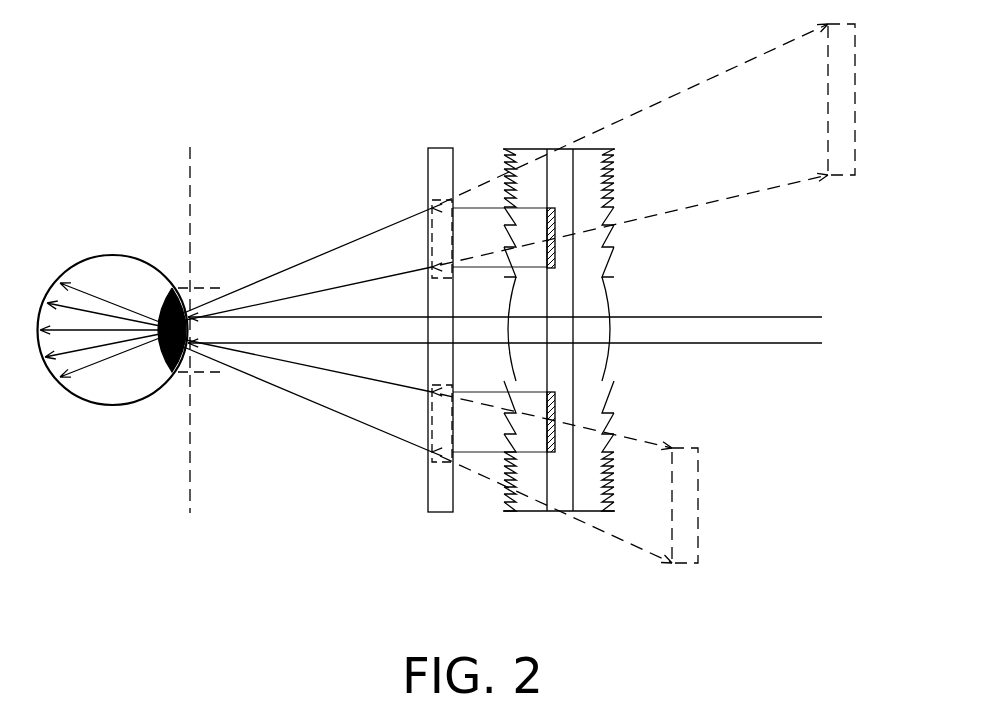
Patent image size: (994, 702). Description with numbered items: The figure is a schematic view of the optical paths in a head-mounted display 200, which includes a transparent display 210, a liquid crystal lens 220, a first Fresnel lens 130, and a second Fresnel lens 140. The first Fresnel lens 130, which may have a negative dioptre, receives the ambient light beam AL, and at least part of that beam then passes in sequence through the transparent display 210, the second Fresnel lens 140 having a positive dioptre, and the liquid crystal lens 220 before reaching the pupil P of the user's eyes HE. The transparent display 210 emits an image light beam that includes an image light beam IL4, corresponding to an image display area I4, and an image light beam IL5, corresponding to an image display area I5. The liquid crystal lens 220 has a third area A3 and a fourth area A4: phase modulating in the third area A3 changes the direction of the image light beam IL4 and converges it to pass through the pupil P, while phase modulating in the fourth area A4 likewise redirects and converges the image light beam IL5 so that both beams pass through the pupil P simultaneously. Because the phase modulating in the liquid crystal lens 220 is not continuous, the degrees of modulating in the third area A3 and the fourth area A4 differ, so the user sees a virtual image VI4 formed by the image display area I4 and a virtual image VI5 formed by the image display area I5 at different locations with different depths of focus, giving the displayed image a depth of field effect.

The first Fresnel lens 130 is at (594, 154).
The second Fresnel lens 140 is at (537, 492).
The head-mounted display 200 is at (654, 598).
The transparent display 210 is at (562, 154).
The liquid crystal lens 220 is at (432, 492).
The third area A3 is at (437, 200).
The fourth area A4 is at (437, 462).
The ambient light beam AL is at (776, 343).
The user's eyes HE is at (113, 390).
The pupil P is at (190, 468).
The image display area I4 is at (555, 253).
The image display area I5 is at (555, 405).
The image light beam IL4 is at (352, 288).
The image light beam IL5 is at (350, 418).
The virtual image VI4 is at (855, 133).
The virtual image VI5 is at (698, 497).